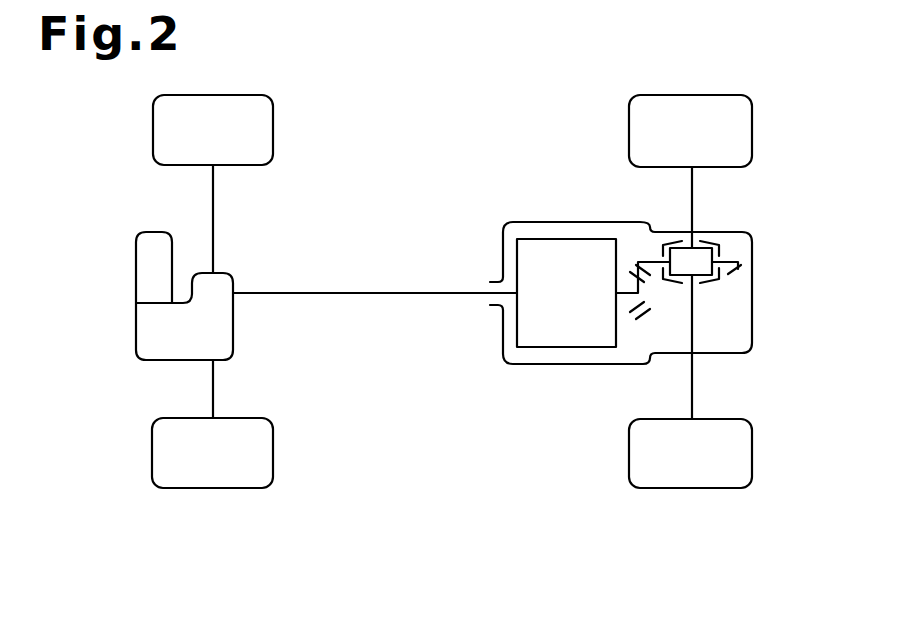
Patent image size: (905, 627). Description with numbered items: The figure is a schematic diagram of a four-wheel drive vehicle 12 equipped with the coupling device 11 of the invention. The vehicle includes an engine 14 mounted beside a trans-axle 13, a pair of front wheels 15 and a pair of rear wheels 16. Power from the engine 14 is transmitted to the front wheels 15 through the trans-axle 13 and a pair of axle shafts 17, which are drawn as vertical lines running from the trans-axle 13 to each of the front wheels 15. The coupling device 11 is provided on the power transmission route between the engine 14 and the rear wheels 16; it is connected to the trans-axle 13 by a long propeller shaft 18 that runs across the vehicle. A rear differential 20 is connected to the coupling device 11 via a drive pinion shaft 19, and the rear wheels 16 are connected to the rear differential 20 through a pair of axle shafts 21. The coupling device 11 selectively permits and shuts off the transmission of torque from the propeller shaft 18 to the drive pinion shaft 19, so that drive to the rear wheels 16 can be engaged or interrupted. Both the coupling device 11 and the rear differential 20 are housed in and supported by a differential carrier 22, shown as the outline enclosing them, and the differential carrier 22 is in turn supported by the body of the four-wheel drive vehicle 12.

The coupling device 11 is at (577, 239).
The four-wheel drive vehicle 12 is at (490, 90).
The trans-axle 13 is at (136, 330).
The engine 14 is at (136, 276).
The front wheels 15 is at (274, 127).
The rear wheels 16 is at (752, 129).
The axle shafts 17 is at (213, 218).
The propeller shaft 18 is at (380, 292).
The drive pinion shaft 19 is at (623, 295).
The rear differential 20 is at (725, 290).
The axle shafts 21 is at (692, 201).
The differential carrier 22 is at (518, 222).